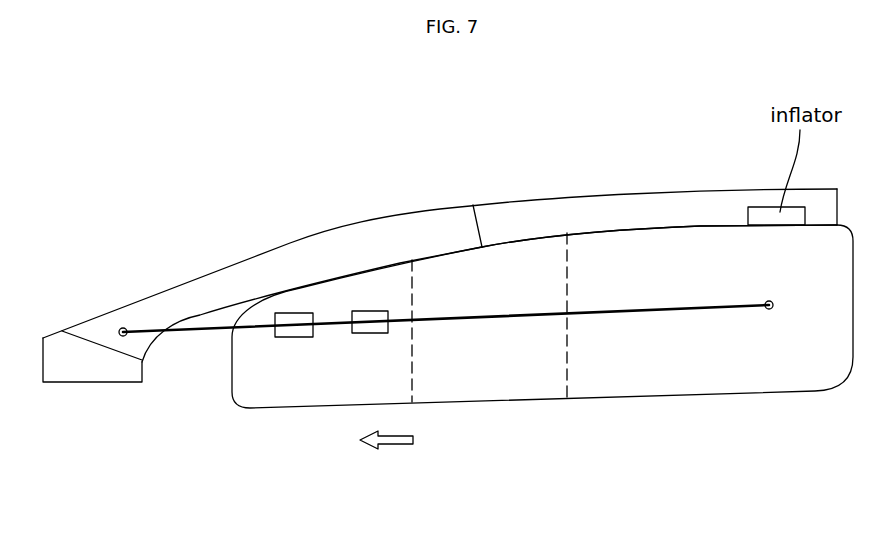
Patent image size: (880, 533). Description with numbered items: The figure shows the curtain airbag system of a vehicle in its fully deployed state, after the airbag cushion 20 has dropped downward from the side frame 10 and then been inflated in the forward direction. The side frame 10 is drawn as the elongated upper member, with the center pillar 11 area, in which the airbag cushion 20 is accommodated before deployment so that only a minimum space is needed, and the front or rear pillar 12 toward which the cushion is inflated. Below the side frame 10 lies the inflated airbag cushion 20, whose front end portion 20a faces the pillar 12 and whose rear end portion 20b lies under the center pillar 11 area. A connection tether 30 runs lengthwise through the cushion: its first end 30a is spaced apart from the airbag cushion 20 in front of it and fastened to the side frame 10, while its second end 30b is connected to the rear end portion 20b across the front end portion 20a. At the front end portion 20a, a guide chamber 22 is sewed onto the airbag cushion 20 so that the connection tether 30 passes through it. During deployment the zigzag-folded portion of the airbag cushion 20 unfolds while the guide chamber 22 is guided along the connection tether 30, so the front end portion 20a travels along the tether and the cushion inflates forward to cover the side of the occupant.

The side frame 10 is at (492, 203).
The center pillar 11 is at (652, 200).
The front or rear pillar 12 is at (198, 288).
The airbag cushion 20 is at (583, 405).
The front end portion 20a is at (298, 388).
The rear end portion 20b is at (808, 368).
The guide chamber 22 is at (292, 312).
The connection tether 30 is at (492, 320).
The first end 30a is at (203, 330).
The second end 30b is at (665, 312).